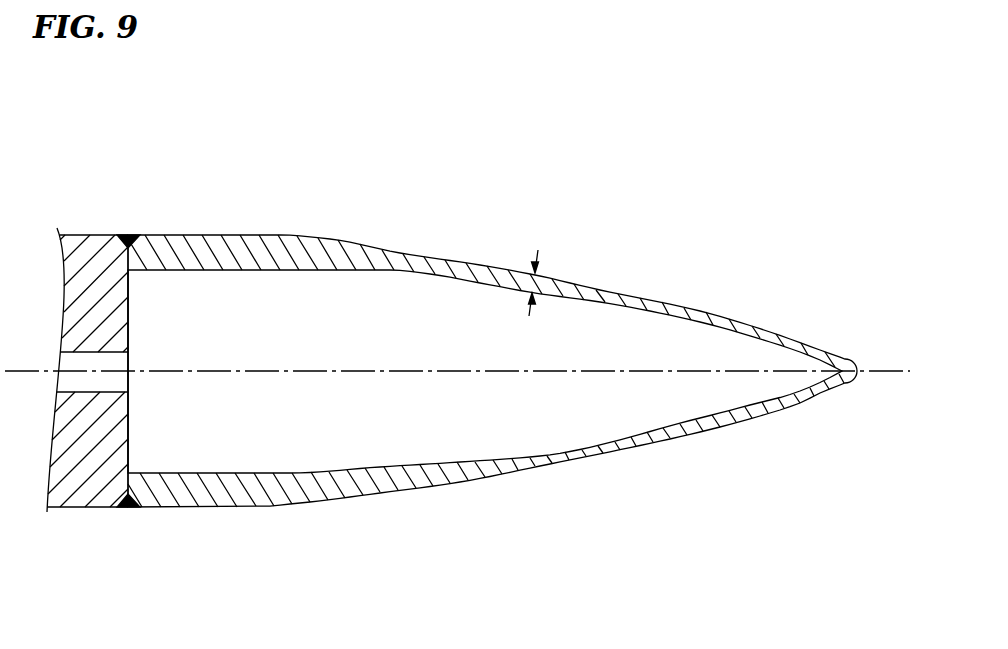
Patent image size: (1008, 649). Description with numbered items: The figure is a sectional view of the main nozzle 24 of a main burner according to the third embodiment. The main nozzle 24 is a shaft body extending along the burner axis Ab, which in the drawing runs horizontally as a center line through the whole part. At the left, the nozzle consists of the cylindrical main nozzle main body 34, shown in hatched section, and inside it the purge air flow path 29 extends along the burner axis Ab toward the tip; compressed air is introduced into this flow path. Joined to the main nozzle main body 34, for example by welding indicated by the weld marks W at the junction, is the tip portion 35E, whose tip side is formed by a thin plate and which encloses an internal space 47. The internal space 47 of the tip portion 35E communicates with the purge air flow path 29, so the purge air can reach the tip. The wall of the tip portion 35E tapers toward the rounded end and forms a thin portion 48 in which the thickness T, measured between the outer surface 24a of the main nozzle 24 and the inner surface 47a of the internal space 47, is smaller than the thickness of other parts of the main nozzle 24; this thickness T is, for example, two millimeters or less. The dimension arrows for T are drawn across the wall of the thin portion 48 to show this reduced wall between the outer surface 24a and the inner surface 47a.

The main nozzle 24 is at (311, 237).
The outer surface of the main nozzle 24a is at (370, 248).
The purge air flow path 29 is at (107, 386).
The main nozzle main body 34 is at (87, 375).
The tip portion 35E is at (702, 310).
The internal space 47 is at (418, 302).
The inner surface of the internal space 47a is at (340, 272).
The thin portion 48 is at (615, 287).
The thickness T is at (533, 268).
The weld W is at (131, 238).
The burner axis Ab is at (890, 370).